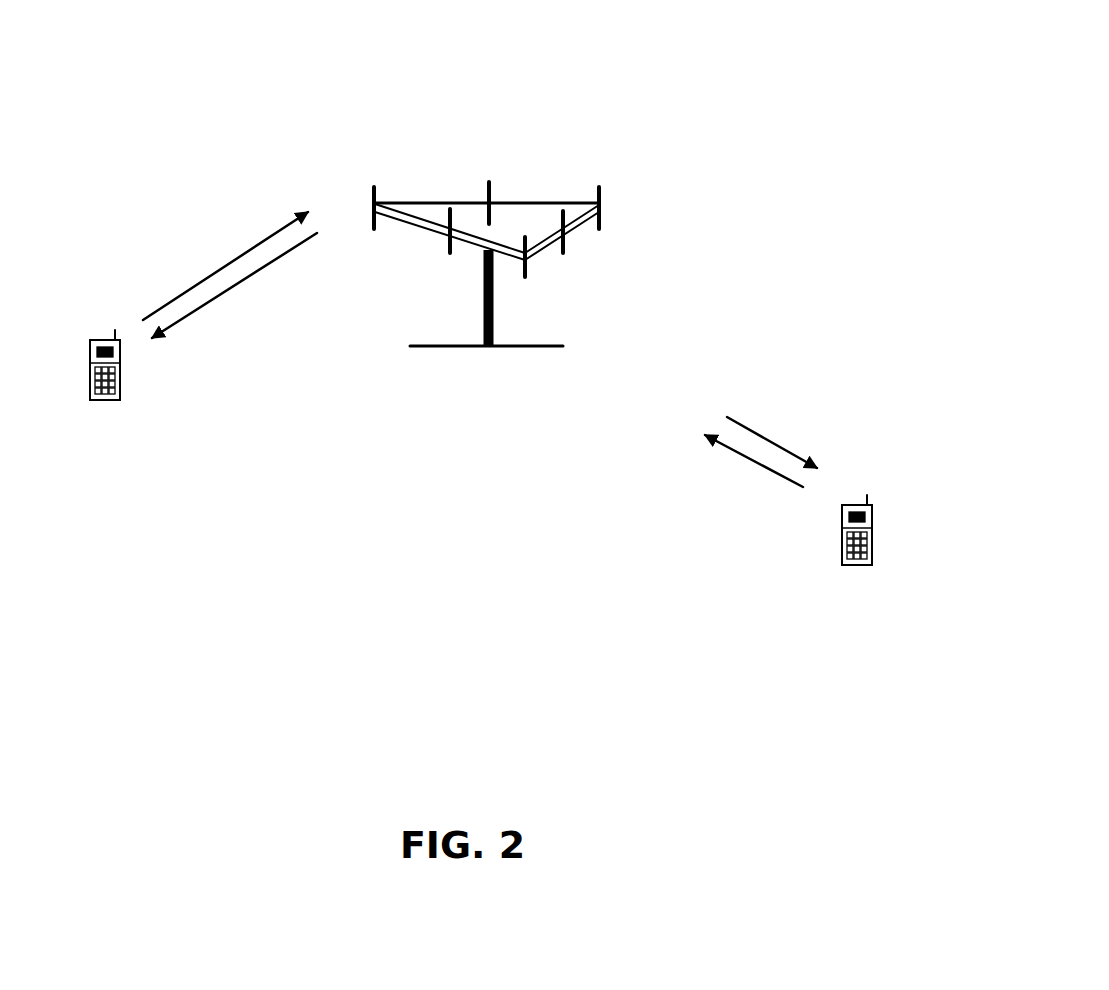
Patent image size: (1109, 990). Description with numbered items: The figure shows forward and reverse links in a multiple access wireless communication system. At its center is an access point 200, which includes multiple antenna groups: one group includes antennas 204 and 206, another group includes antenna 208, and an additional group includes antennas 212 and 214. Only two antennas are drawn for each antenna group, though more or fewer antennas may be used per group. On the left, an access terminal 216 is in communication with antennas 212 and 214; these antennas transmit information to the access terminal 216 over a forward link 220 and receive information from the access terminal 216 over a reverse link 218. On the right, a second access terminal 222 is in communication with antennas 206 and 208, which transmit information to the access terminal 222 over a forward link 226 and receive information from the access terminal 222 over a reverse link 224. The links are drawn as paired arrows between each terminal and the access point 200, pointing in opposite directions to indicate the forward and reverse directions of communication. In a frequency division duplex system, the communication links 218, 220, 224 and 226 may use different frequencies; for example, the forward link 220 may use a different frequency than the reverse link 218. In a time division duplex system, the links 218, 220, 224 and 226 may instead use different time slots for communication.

The access point 200 is at (408, 176).
The antenna 204 is at (530, 275).
The antenna 206 is at (565, 253).
The antenna 208 is at (605, 222).
The antenna 212 is at (374, 203).
The antenna 214 is at (450, 253).
The access terminal 216 is at (103, 338).
The reverse link 218 is at (222, 265).
The forward link 220 is at (489, 183).
The access terminal 222 is at (855, 505).
The reverse link 224 is at (742, 457).
The forward link 226 is at (778, 447).